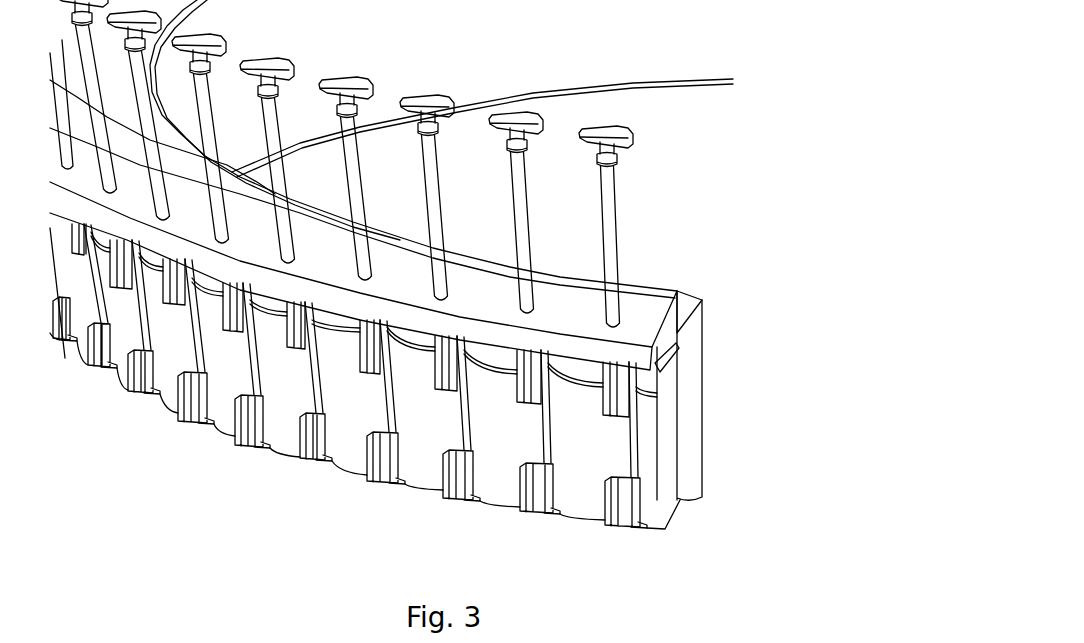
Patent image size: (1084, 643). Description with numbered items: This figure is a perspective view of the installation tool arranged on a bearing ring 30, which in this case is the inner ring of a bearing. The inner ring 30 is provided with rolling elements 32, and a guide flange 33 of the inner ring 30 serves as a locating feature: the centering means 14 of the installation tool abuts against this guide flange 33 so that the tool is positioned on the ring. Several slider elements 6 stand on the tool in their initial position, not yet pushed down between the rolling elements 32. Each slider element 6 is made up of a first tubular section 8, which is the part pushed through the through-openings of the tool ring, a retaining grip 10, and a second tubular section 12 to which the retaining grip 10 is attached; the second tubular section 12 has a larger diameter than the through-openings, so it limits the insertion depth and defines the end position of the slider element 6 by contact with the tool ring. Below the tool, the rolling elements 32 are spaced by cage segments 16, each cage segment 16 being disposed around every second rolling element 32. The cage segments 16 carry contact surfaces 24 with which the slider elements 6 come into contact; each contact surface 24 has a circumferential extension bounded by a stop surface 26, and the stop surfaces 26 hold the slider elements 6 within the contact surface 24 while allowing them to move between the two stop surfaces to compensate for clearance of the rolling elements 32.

The slider element 6 is at (614, 121).
The first tubular section 8 is at (635, 246).
The retaining grip 10 is at (642, 152).
The second tubular section 12 is at (650, 179).
The centering means 14 is at (678, 290).
The cage segment 16 is at (637, 531).
The contact surface 24 is at (620, 528).
The stop surface 26 is at (402, 438).
The bearing ring 30 is at (693, 409).
The rolling element 32 is at (503, 489).
The guide flange 33 is at (680, 330).